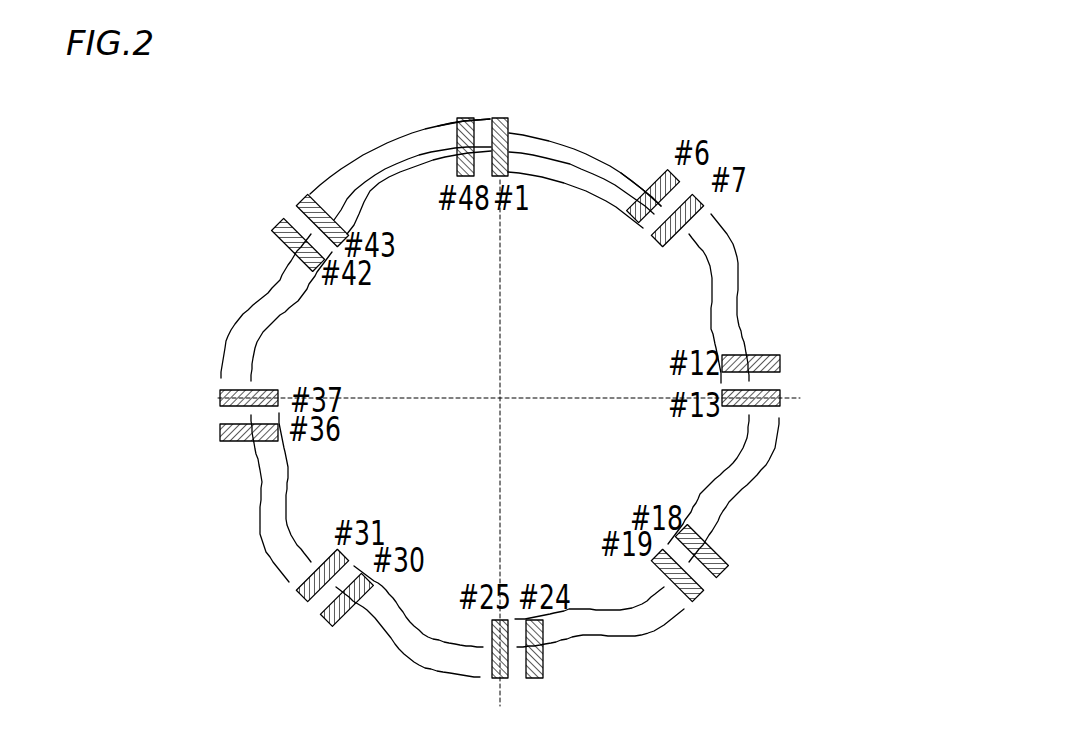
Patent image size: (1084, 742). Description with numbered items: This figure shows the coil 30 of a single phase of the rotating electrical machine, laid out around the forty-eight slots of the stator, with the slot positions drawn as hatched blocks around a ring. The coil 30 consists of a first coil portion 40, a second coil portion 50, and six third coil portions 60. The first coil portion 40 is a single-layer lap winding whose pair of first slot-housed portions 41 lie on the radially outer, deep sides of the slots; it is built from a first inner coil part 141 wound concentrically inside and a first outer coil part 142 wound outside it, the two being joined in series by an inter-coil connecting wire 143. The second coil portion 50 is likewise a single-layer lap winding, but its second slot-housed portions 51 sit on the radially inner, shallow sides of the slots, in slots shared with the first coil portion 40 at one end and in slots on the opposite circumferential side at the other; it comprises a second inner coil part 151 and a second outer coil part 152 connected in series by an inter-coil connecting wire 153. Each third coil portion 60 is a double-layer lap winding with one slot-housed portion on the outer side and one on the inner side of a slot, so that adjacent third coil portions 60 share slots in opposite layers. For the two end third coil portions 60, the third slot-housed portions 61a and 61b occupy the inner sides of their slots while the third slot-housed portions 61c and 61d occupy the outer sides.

The coil 30 is at (750, 135).
The first coil portion 40 is at (369, 147).
The first slot-housed portions 41 is at (466, 120).
The first inner coil part 141 is at (462, 142).
The first outer coil part 142 is at (288, 250).
The inter-coil connecting wire 143 is at (388, 183).
The second coil portion 50 is at (601, 164).
The second slot-housed portions 51 is at (514, 150).
The second inner coil part 151 is at (534, 160).
The second outer coil part 152 is at (660, 250).
The inter-coil connecting wire 153 is at (546, 200).
The third coil portions 60 is at (232, 330).
The third slot-housed portion 61a is at (726, 406).
The third slot-housed portion 61b is at (724, 372).
The third slot-housed portion 61c is at (225, 398).
The third slot-housed portion 61d is at (225, 433).